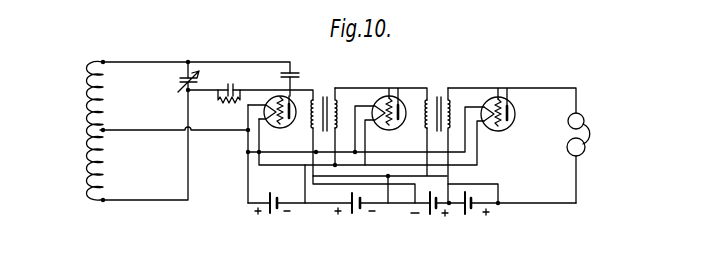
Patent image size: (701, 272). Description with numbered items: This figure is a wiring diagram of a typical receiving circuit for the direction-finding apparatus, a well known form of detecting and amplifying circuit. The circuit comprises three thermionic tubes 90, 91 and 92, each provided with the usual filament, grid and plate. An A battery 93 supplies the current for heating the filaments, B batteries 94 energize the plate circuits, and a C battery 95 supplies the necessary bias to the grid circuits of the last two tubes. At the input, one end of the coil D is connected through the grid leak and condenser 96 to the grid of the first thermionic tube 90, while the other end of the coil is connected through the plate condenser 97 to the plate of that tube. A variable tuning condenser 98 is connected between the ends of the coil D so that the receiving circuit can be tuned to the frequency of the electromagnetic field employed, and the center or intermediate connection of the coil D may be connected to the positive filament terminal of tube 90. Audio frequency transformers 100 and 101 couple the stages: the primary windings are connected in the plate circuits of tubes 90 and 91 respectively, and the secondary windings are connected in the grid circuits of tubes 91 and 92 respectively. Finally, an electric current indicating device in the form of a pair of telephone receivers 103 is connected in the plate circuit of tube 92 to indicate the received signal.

The coil D is at (82, 112).
The variable tuning condenser 98 is at (183, 70).
The plate condenser 97 is at (300, 74).
The grid leak and condenser 96 is at (230, 104).
The first thermionic tube 90 is at (281, 129).
The second thermionic tube 91 is at (392, 129).
The third thermionic tube 92 is at (505, 129).
The first audio frequency transformer 100 is at (346, 92).
The second audio frequency transformer 101 is at (444, 89).
The telephone receivers 103 is at (591, 134).
The A battery 93 is at (250, 204).
The B batteries 94 is at (480, 216).
The C battery 95 is at (352, 221).